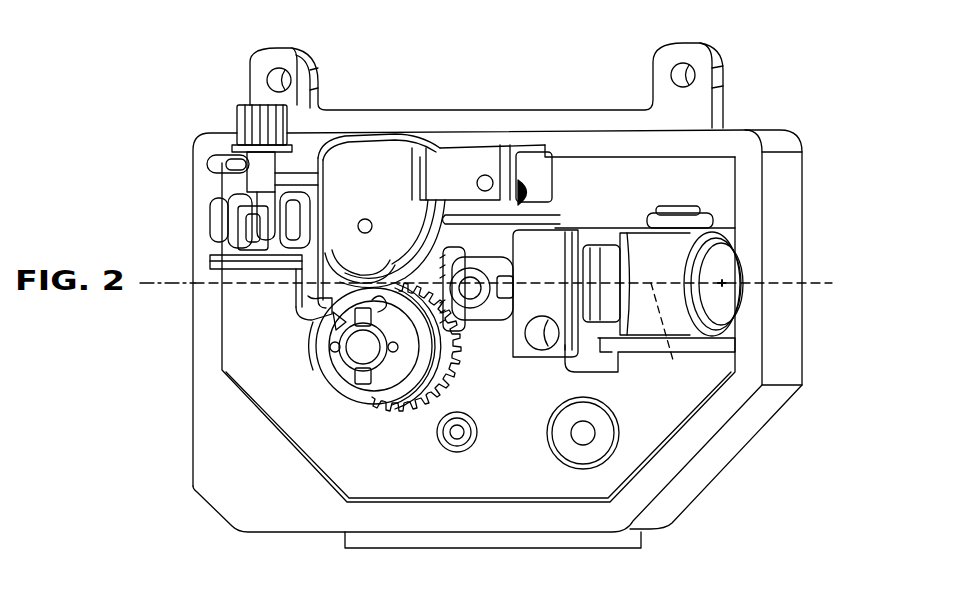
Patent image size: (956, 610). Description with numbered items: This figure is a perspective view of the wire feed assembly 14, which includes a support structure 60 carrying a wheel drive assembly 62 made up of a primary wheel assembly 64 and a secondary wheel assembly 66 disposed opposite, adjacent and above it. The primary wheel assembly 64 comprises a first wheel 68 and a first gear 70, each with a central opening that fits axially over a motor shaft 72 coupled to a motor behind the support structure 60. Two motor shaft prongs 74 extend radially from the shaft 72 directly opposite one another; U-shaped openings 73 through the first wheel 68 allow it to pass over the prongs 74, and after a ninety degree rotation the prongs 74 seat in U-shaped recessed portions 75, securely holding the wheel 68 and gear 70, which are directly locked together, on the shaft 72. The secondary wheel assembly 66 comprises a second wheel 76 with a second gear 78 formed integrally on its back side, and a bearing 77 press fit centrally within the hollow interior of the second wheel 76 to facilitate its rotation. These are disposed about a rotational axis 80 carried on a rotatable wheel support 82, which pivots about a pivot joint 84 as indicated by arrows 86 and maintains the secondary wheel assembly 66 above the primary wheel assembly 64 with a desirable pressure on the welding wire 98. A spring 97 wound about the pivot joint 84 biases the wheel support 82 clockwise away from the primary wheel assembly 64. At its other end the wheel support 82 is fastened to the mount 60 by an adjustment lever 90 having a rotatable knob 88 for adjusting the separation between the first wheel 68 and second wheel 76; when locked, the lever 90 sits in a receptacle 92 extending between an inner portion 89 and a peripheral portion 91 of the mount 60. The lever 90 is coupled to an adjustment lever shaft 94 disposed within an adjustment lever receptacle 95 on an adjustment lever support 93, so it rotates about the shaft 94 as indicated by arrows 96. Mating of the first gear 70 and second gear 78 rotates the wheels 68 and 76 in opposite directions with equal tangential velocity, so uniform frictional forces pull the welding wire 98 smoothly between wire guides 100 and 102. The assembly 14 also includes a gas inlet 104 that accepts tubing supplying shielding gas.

The wire feed assembly 14 is at (148, 52).
The support structure 60 is at (723, 447).
The wheel drive assembly 62 is at (255, 375).
The primary wheel assembly 64 is at (265, 447).
The secondary wheel assembly 66 is at (450, 125).
The first wheel 68 is at (342, 390).
The first gear 70 is at (435, 392).
The motor shaft 72 is at (362, 378).
The U-shaped openings 73 is at (340, 333).
The motor shaft prongs 74 is at (372, 305).
The U-shaped recessed portions 75 is at (414, 238).
The second wheel 76 is at (455, 230).
The bearing 77 is at (378, 266).
The second gear 78 is at (480, 200).
The rotational axis 80 is at (365, 218).
The wheel support 82 is at (418, 160).
The pivot joint 84 is at (522, 195).
The arrows 86 is at (456, 162).
The rotatable knob 88 is at (251, 104).
The inner portion 89 is at (318, 156).
The adjustment lever 90 is at (222, 130).
The peripheral portion 91 is at (215, 160).
The receptacle 92 is at (236, 168).
The adjustment lever support 93 is at (243, 262).
The adjustment lever shaft 94 is at (275, 255).
The adjustment lever receptacle 95 is at (235, 268).
The arrows 96 is at (172, 238).
The spring 97 is at (545, 175).
The welding wire 98 is at (681, 311).
The wire guide 100 is at (318, 306).
The wire guide 102 is at (514, 254).
The gas inlet 104 is at (545, 350).